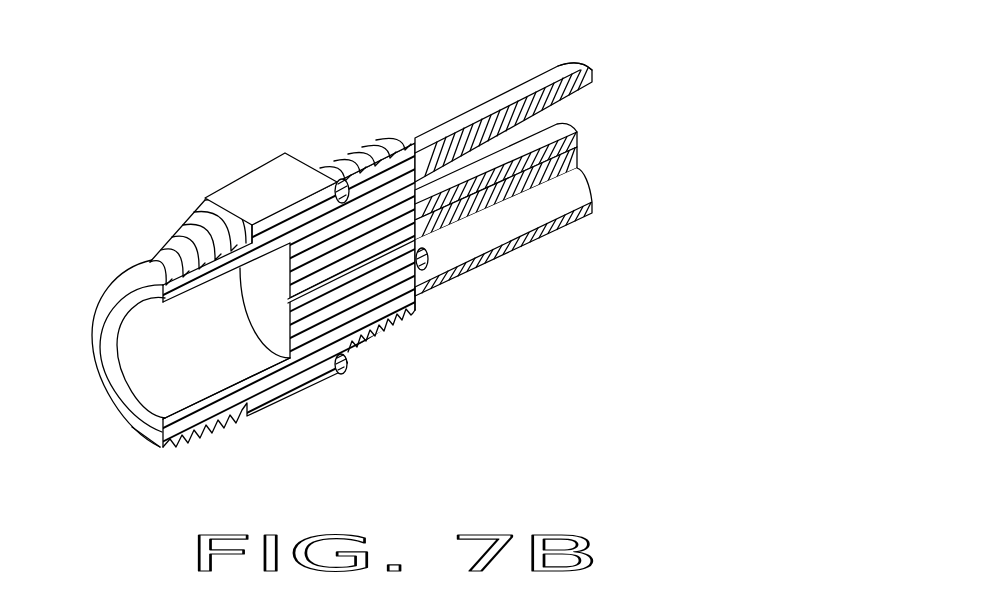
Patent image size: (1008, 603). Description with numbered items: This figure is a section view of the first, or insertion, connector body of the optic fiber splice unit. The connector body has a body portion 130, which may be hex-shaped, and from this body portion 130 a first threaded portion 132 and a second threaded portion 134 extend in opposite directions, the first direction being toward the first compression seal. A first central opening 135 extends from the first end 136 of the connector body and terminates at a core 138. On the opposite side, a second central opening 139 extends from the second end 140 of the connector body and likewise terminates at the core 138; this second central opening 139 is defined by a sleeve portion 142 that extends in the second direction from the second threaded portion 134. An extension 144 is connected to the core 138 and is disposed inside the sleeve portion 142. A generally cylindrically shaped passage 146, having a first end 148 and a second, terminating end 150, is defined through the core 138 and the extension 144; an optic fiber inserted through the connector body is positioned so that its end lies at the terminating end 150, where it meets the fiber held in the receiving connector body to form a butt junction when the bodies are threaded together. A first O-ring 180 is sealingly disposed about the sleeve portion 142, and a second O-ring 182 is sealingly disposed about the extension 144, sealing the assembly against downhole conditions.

The body portion 130 is at (277, 172).
The first threaded portion 132 is at (150, 260).
The second threaded portion 134 is at (377, 138).
The first central opening 135 is at (130, 357).
The first end 136 is at (143, 432).
The core 138 is at (213, 230).
The second central opening 139 is at (557, 203).
The second end 140 is at (577, 62).
The sleeve portion 142 is at (507, 92).
The extension 144 is at (580, 167).
The passage 146 is at (485, 200).
The first end 148 is at (290, 303).
The terminating end 150 is at (578, 147).
The first O-ring 180 is at (347, 370).
The second O-ring 182 is at (430, 265).